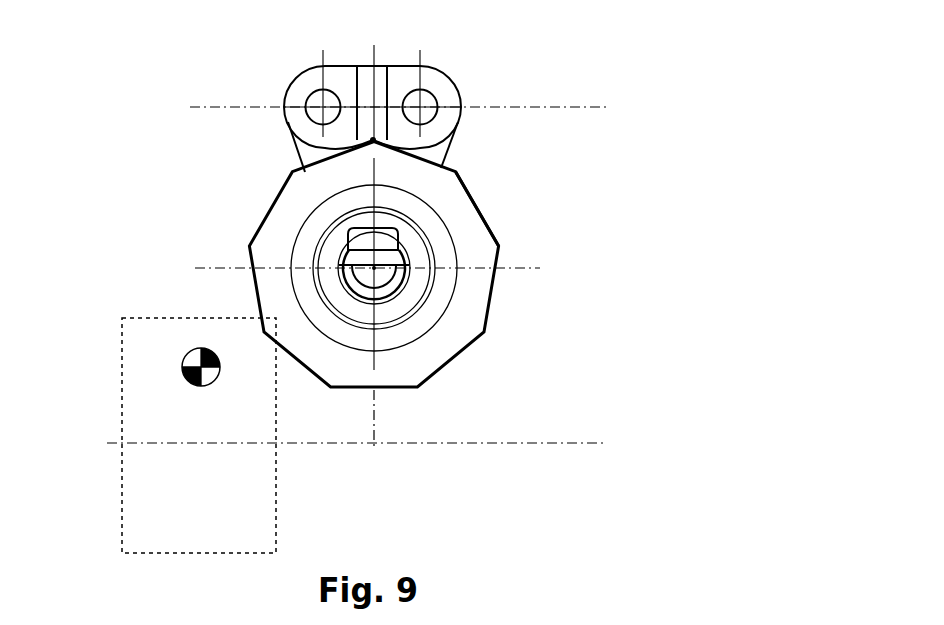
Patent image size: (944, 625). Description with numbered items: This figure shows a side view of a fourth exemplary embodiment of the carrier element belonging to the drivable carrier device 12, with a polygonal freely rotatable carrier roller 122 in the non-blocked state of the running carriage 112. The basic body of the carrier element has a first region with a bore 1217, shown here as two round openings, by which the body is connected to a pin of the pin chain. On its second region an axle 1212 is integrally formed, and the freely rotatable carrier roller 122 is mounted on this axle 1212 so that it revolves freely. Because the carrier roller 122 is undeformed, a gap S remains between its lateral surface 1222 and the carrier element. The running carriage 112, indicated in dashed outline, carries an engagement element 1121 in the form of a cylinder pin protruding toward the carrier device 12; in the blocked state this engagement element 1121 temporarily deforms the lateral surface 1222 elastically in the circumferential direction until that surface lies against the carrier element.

The carrier device 12 is at (157, 98).
The running carriage 112 is at (157, 493).
The engagement element 1121 is at (194, 358).
The freely rotatable carrier roller 122 is at (295, 201).
The axle 1212 is at (374, 268).
The bore 1217 is at (328, 98).
The lateral surface 1222 is at (469, 201).
The gap S is at (373, 140).